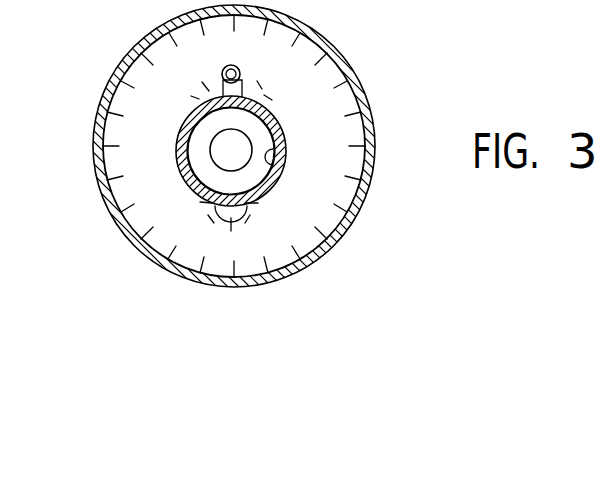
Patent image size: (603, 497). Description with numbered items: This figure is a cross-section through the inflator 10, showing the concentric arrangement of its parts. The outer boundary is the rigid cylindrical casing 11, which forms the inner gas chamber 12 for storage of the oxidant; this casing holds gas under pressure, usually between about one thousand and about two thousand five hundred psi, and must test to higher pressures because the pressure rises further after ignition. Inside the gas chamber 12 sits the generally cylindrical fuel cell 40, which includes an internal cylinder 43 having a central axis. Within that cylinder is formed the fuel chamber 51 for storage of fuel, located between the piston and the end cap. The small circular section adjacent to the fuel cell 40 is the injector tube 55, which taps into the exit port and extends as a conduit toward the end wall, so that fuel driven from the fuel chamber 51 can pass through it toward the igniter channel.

The inflator 10 is at (372, 99).
The rigid cylindrical casing 11 is at (348, 147).
The inner gas chamber 12 is at (332, 155).
The fuel cell 40 is at (282, 114).
The internal cylinder 43 is at (272, 168).
The fuel chamber 51 is at (212, 182).
The injector tube 55 is at (222, 76).